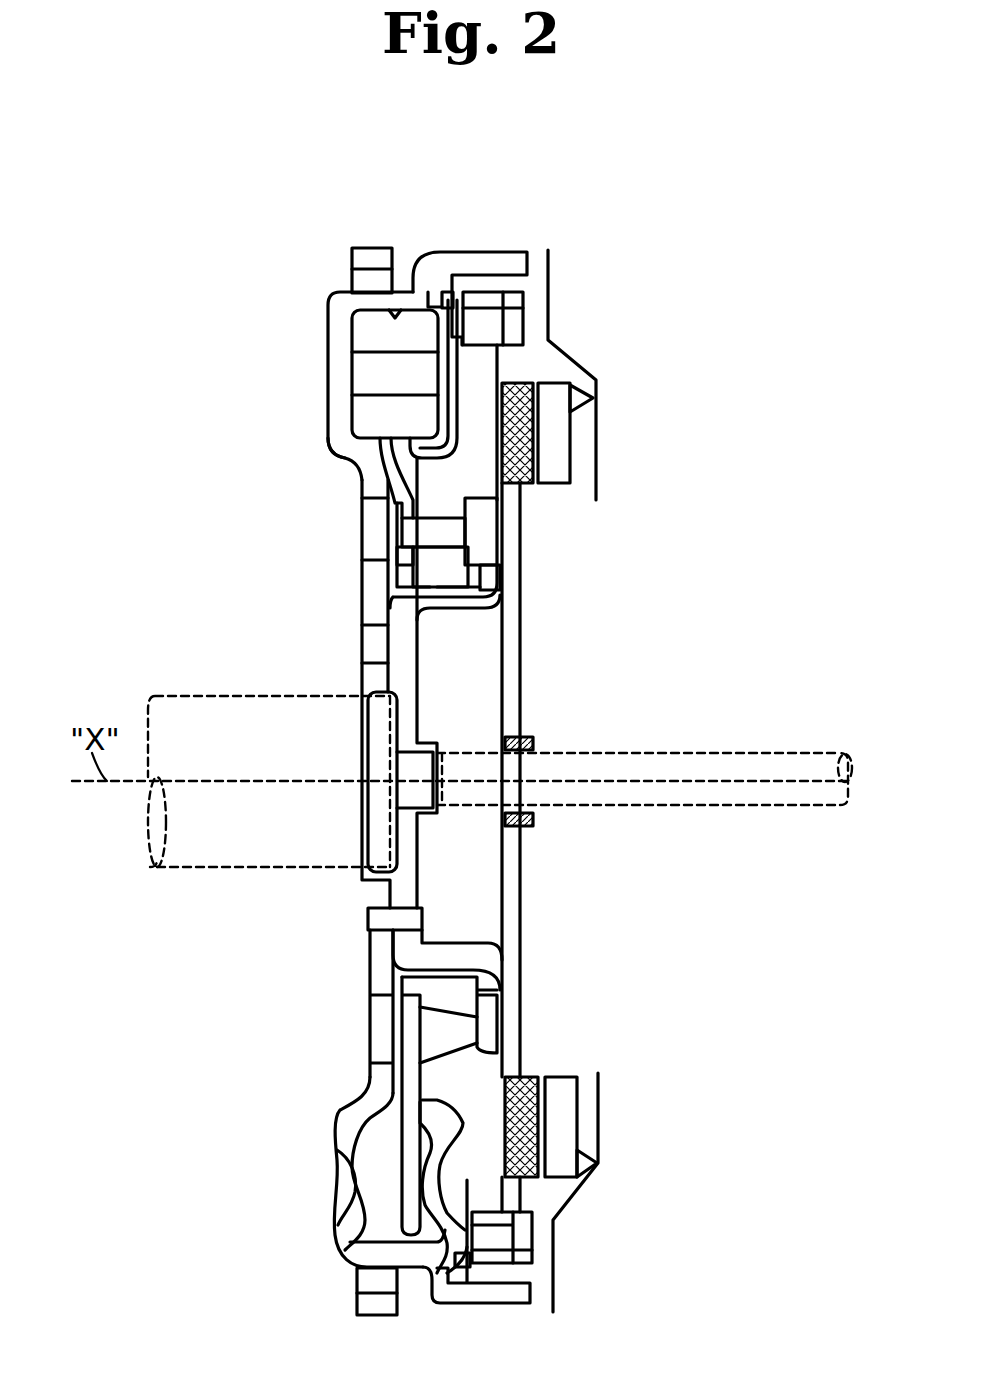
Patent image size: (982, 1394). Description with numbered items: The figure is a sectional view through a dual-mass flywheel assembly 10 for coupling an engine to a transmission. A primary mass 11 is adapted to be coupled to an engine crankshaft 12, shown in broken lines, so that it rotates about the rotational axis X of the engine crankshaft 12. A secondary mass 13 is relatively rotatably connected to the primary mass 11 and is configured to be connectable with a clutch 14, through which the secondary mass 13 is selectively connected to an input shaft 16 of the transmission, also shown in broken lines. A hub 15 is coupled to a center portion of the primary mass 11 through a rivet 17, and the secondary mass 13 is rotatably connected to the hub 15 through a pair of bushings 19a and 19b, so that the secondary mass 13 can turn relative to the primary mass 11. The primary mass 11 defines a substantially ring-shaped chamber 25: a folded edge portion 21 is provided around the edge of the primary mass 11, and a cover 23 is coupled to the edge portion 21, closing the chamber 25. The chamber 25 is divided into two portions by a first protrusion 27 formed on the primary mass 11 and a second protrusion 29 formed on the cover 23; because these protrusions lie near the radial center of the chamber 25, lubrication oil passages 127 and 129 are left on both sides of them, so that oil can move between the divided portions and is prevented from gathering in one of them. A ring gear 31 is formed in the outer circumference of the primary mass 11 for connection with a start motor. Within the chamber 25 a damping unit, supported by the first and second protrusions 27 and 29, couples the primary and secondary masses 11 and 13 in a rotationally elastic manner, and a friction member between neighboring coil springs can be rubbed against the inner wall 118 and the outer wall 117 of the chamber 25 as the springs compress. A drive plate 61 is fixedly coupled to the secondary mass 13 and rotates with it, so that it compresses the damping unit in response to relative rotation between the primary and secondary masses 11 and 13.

The clutch damper device 10 is at (742, 497).
The primary mass 11 is at (330, 383).
The engine crankshaft 12 is at (217, 693).
The secondary mass 13 is at (487, 417).
The clutch 14 is at (577, 500).
The hub 15 is at (363, 690).
The input shaft 16 is at (812, 752).
The rivet 17 is at (368, 920).
The bushing 19a is at (473, 587).
The bushing 19b is at (362, 594).
The folded edge portion 21 is at (490, 252).
The cover 23 is at (448, 362).
The ring-shaped chamber 25 is at (373, 1232).
The first protrusion 27 is at (352, 1177).
The second protrusion 29 is at (440, 1195).
The ring gear 31 is at (352, 285).
The drive plate 61 is at (372, 476).
The outer wall 117 is at (395, 312).
The inner wall 118 is at (330, 447).
The lubrication oil passage 127 is at (370, 1118).
The lubrication oil passage 129 is at (358, 1238).